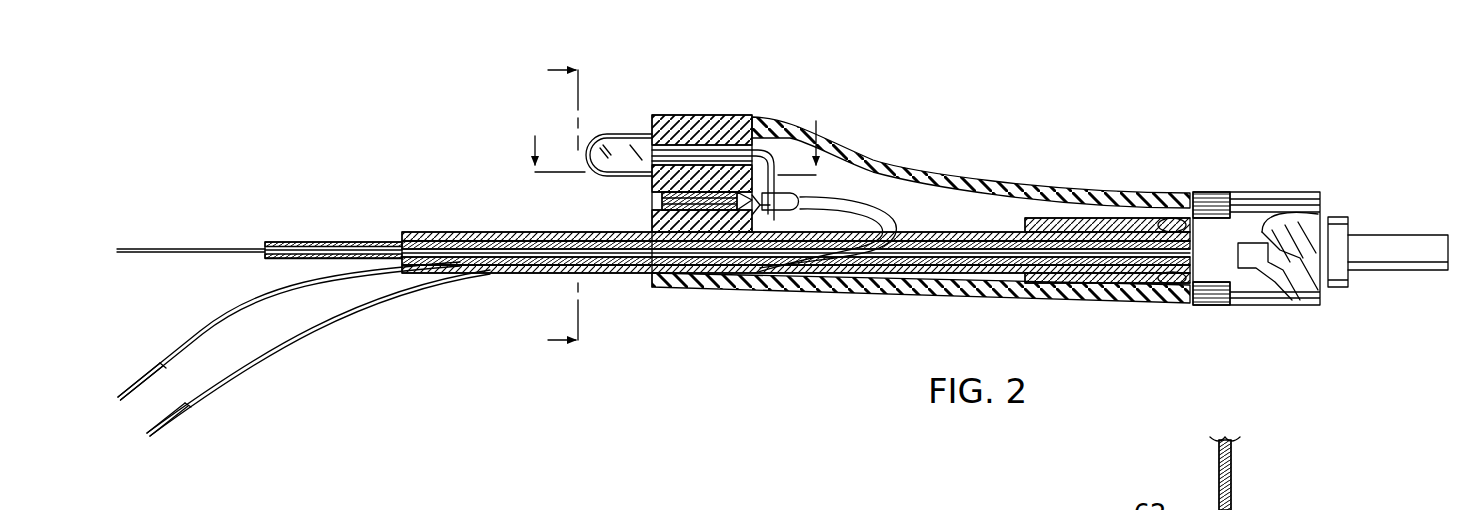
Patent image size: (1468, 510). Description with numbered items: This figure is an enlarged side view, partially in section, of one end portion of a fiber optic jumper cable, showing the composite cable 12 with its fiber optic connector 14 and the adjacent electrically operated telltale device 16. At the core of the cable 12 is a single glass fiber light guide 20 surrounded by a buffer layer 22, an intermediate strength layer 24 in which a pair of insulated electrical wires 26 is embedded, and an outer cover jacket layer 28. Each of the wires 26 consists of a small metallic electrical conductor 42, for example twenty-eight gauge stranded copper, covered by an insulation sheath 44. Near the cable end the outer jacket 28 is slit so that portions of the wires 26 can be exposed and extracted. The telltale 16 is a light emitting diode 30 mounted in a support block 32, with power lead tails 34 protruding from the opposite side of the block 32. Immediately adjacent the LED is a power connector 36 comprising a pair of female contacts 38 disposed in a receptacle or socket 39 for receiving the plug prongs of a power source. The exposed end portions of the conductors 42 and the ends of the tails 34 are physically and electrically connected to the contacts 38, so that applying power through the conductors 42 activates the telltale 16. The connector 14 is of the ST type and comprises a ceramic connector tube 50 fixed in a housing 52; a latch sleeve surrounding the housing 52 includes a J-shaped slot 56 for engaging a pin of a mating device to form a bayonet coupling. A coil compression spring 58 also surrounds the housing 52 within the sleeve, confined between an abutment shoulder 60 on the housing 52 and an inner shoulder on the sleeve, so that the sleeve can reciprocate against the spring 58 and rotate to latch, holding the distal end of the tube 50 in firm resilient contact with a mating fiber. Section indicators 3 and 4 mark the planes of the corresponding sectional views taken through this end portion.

The composite cable 12 is at (507, 277).
The fiber optic connector 14 is at (1209, 180).
The telltale device 16 is at (601, 131).
The glass fiber light guide 20 is at (141, 249).
The buffer layer 22 is at (307, 242).
The intermediate strength layer 24 is at (402, 240).
The insulated electrical wires 26 is at (226, 304).
The outer cover jacket layer 28 is at (420, 232).
The light emitting diode 30 is at (625, 140).
The support block 32 is at (712, 125).
The power lead tails 34 is at (778, 147).
The power connector 36 is at (647, 220).
The female contacts 38 is at (722, 205).
The receptacle or socket 39 is at (782, 228).
The metallic electrical conductor 42 is at (128, 385).
The insulation sheath 44 is at (204, 330).
The ceramic connector tube 50 is at (1250, 194).
The housing 52 is at (1334, 217).
The J-shaped slot 56 is at (1275, 305).
The coil compression spring 58 is at (1308, 228).
The abutment shoulder 60 is at (1297, 290).
The section line 3 is at (553, 204).
The section line 4 is at (673, 134).